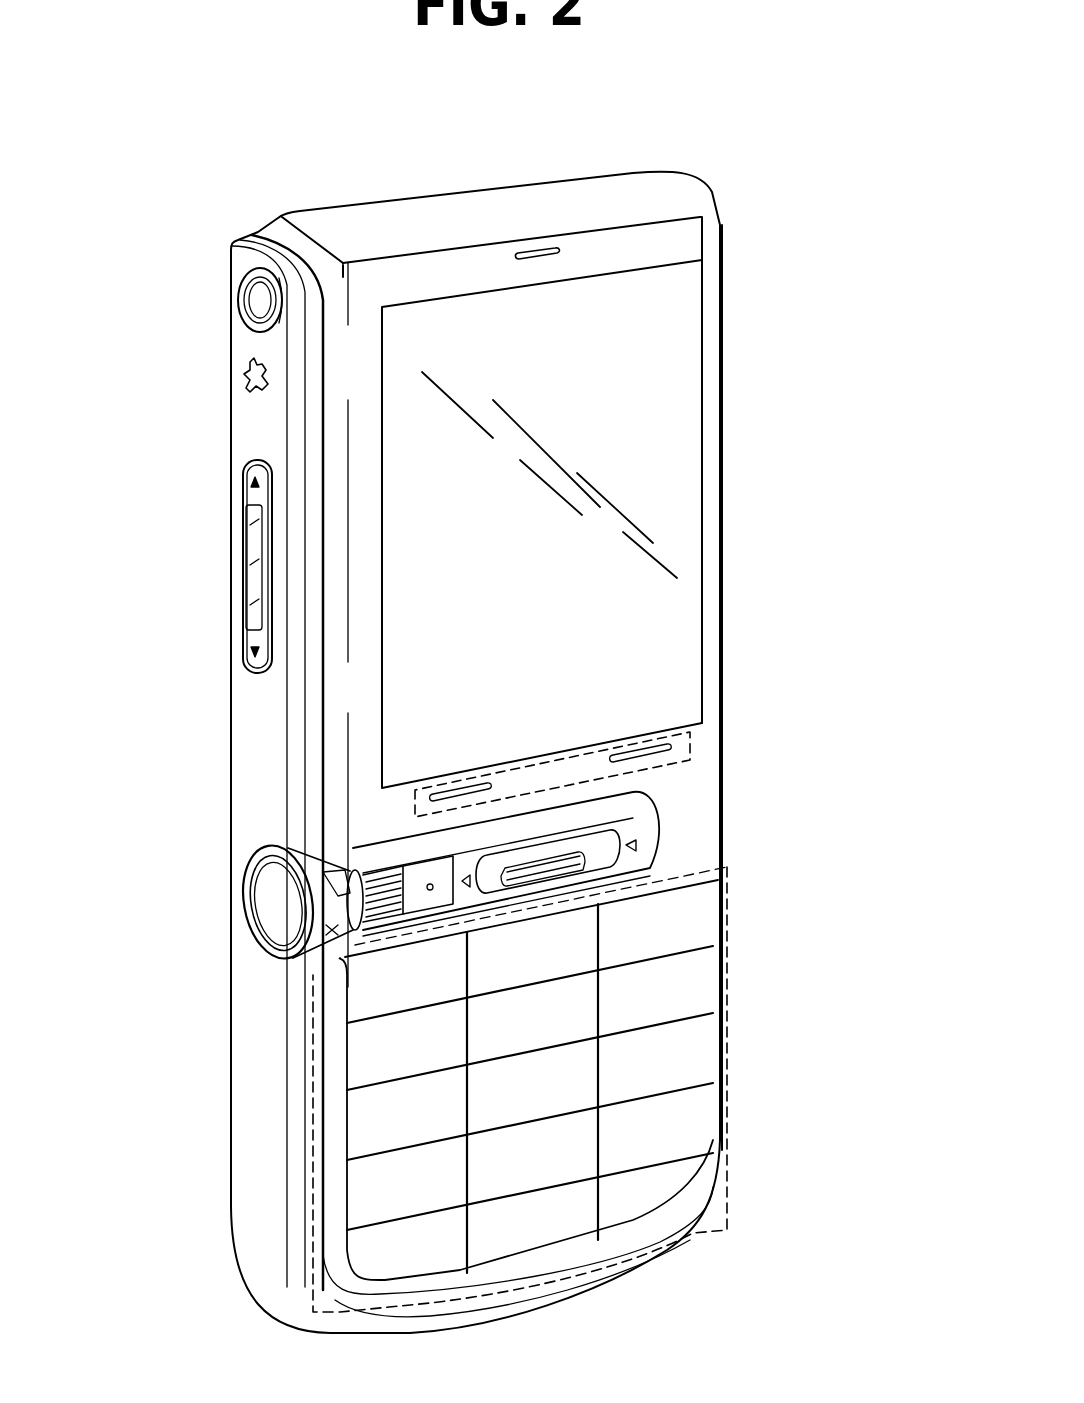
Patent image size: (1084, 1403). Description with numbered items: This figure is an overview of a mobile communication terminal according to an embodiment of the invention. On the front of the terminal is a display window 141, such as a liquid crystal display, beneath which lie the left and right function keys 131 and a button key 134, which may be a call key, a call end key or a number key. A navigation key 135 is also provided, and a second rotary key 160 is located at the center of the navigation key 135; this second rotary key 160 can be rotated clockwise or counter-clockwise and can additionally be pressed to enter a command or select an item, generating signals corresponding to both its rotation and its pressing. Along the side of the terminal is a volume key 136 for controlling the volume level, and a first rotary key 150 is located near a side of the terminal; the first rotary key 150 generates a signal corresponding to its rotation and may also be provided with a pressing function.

The left and right function keys 131 is at (692, 727).
The button key 134 is at (730, 1017).
The navigation key 135 is at (653, 820).
The volume key 136 is at (257, 562).
The display window 141 is at (673, 493).
The first rotary key 150 is at (278, 907).
The second rotary key 160 is at (700, 882).